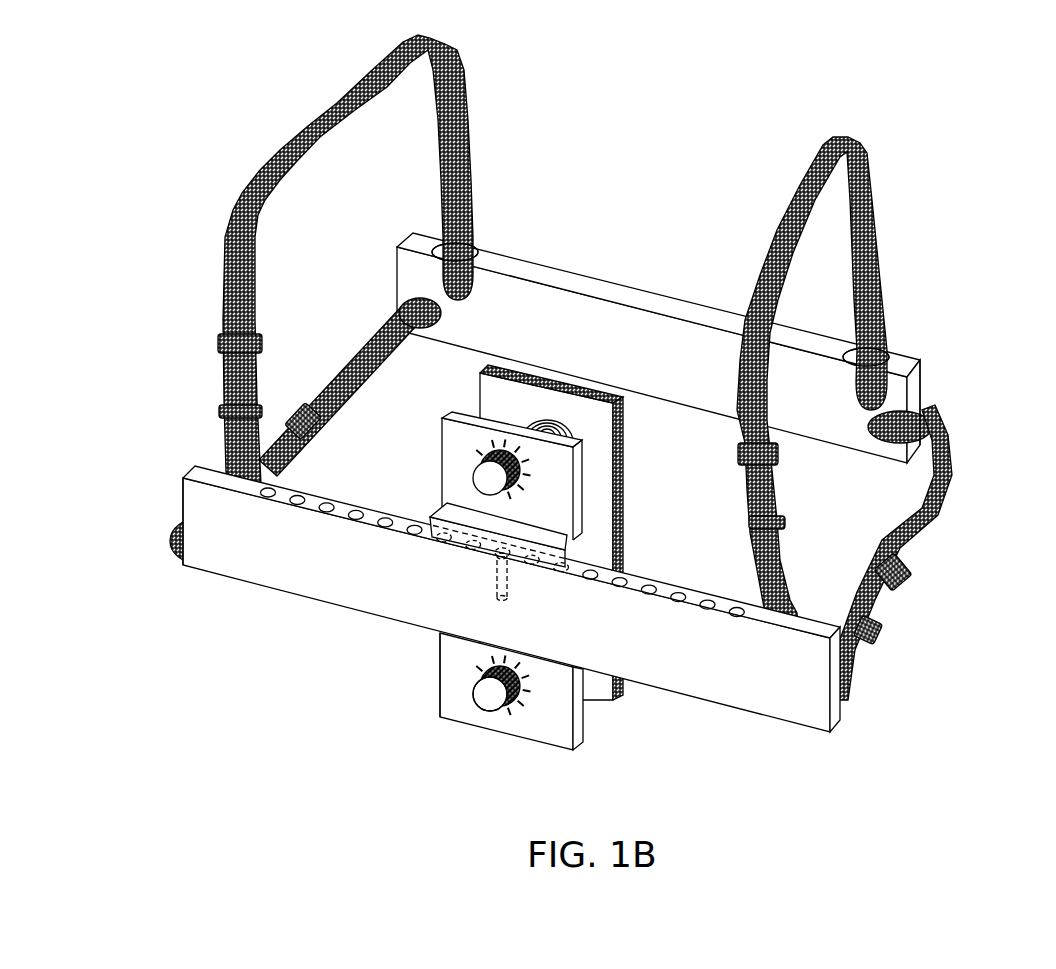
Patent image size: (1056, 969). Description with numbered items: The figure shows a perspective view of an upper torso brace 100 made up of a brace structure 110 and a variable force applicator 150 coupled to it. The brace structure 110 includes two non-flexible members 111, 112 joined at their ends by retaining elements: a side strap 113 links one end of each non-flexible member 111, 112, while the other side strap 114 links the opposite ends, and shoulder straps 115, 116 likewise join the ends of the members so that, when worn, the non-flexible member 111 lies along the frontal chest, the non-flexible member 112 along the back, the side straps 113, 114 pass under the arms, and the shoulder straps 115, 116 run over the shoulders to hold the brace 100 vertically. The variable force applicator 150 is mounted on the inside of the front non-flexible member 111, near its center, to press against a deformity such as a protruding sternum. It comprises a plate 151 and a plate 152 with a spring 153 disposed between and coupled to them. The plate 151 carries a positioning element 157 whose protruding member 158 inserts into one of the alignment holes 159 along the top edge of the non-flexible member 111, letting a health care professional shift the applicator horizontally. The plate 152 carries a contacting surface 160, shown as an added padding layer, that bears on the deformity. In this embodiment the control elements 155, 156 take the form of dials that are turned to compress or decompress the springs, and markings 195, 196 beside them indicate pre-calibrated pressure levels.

The upper torso brace 100 is at (980, 100).
The brace structure 110 is at (287, 620).
The non-flexible member 111 is at (263, 575).
The non-flexible member 112 is at (517, 290).
The side strap 113 is at (937, 523).
The side strap 114 is at (357, 340).
The shoulder strap 115 is at (873, 217).
The shoulder strap 116 is at (318, 112).
The variable force applicator 150 is at (433, 727).
The plate 151 is at (567, 693).
The plate 152 is at (559, 525).
The resilient biasing element 153 is at (500, 412).
The control element 155 is at (488, 478).
The control element 156 is at (490, 693).
The positioning element 157 is at (457, 513).
The protruding member 158 is at (497, 568).
The holes 159 is at (737, 610).
The contacting surface 160 is at (640, 461).
The markings 195 is at (533, 468).
The markings 196 is at (533, 700).